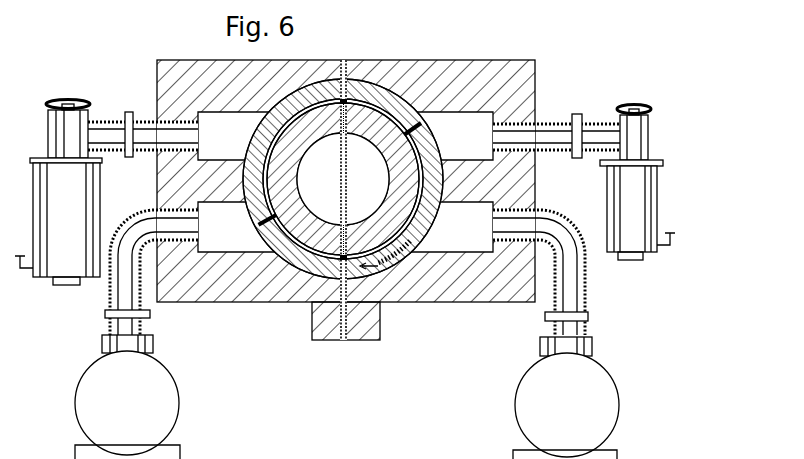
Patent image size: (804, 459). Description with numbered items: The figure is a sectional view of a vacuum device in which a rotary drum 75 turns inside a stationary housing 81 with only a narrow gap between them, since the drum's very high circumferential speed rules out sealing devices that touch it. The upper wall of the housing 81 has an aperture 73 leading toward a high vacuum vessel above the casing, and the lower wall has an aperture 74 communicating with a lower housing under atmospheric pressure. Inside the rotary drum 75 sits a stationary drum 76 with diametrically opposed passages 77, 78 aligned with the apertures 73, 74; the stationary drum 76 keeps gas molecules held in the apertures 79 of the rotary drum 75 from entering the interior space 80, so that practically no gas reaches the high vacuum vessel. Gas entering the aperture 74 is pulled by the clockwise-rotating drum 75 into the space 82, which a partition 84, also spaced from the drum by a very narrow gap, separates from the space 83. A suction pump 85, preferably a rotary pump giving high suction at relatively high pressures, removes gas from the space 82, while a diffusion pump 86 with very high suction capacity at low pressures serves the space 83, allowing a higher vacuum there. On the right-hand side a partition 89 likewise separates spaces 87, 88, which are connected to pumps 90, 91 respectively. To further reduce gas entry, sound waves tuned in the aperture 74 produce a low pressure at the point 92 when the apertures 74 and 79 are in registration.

The aperture 73 is at (347, 66).
The aperture 74 is at (343, 341).
The rotary drum 75 is at (313, 97).
The stationary drum 76 is at (289, 155).
The passage 77 is at (348, 120).
The passage 78 is at (344, 232).
The apertures 79 is at (367, 77).
The space 80 is at (343, 179).
The housing 81 is at (518, 78).
The space 82 is at (236, 227).
The space 83 is at (233, 136).
The partition 84 is at (213, 190).
The suction pump 85 is at (155, 375).
The diffusion pump 86 is at (82, 198).
The space 87 is at (455, 136).
The space 88 is at (452, 227).
The partition 89 is at (467, 177).
The pump 90 is at (618, 200).
The pump 91 is at (604, 393).
The point 92 is at (360, 290).